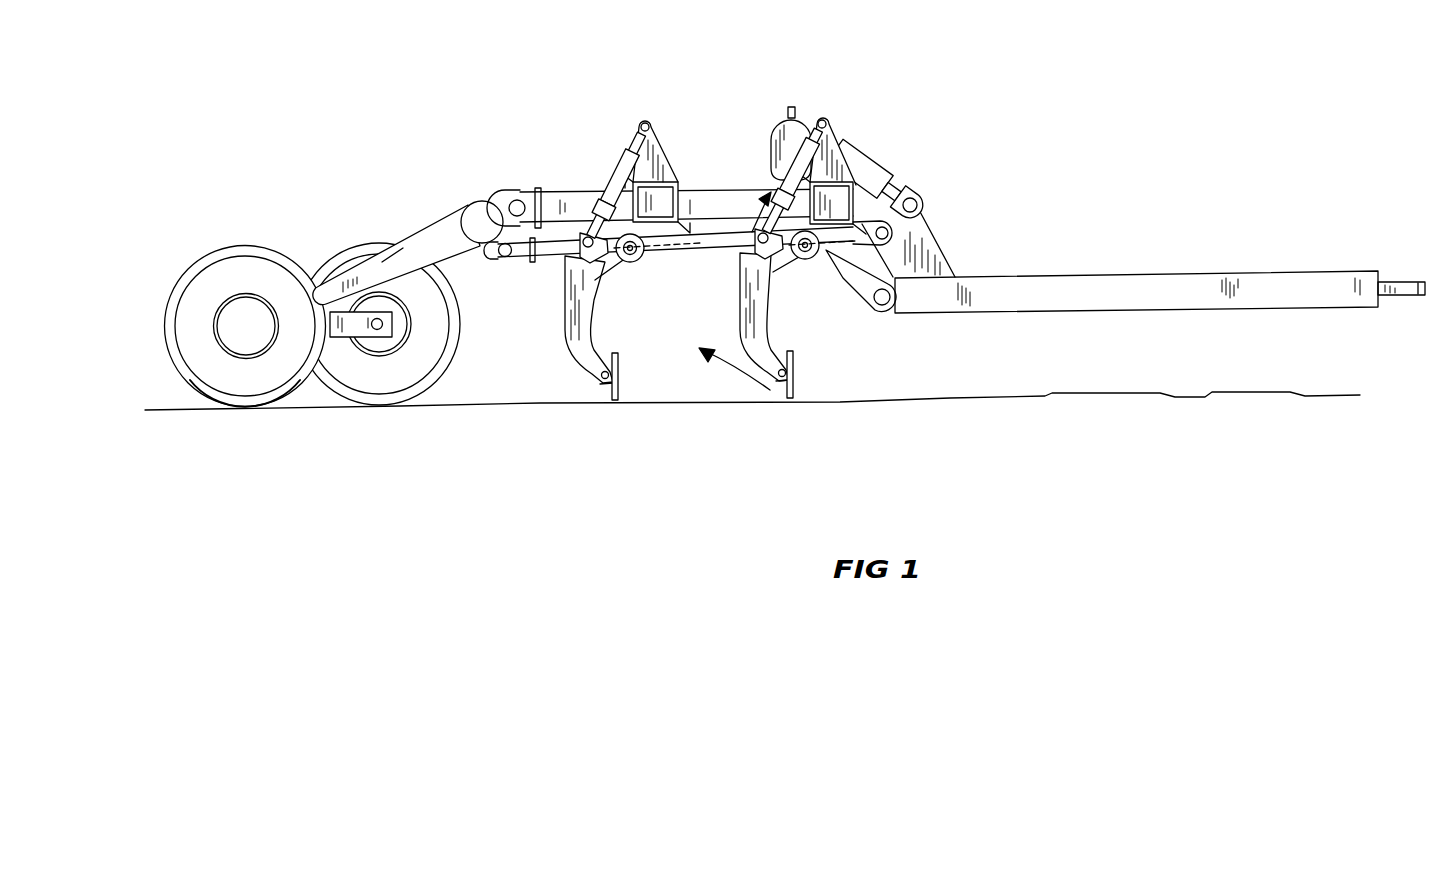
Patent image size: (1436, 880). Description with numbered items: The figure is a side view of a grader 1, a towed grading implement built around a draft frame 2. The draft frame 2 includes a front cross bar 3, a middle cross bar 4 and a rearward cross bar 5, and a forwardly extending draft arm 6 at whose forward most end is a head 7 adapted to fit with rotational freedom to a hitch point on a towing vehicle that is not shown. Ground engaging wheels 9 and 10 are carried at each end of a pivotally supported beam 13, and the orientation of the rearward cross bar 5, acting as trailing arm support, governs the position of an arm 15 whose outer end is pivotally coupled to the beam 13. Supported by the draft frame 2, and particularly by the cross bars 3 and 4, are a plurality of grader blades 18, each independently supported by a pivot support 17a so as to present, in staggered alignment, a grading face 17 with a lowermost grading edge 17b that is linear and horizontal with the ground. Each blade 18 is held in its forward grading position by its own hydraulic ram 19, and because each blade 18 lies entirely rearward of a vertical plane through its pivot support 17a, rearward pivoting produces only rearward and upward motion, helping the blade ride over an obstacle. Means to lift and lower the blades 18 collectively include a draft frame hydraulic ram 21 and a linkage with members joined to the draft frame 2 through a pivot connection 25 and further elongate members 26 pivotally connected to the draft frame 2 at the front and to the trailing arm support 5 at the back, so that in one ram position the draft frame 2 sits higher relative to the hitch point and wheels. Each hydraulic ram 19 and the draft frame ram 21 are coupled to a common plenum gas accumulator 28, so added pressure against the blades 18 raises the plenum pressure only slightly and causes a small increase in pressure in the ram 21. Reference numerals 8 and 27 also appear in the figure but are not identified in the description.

The grader 1 is at (462, 148).
The draft frame 2 is at (547, 201).
The front cross bar 3 is at (838, 202).
The middle cross bar 4 is at (648, 203).
The rearward cross bar 5 is at (462, 225).
The draft arm 6 is at (1018, 295).
The head 7 is at (1402, 287).
The hydraulic cylinder 8 is at (937, 250).
The ground engaging wheel 9 is at (387, 373).
The ground engaging wheel 10 is at (248, 367).
The pivotally supported beam 13 is at (352, 327).
The arm 15 is at (408, 253).
The grading face 17 is at (622, 385).
The pivot support 17a is at (637, 258).
The lowermost grading edge 17b is at (615, 400).
The grader blade 18 is at (578, 353).
The hydraulic ram 19 is at (619, 177).
The draft frame hydraulic ram 21 is at (858, 167).
The pivot connection 25 is at (523, 196).
The elongate members 26 is at (547, 256).
The link 27 is at (862, 263).
The common plenum gas accumulator 28 is at (788, 137).